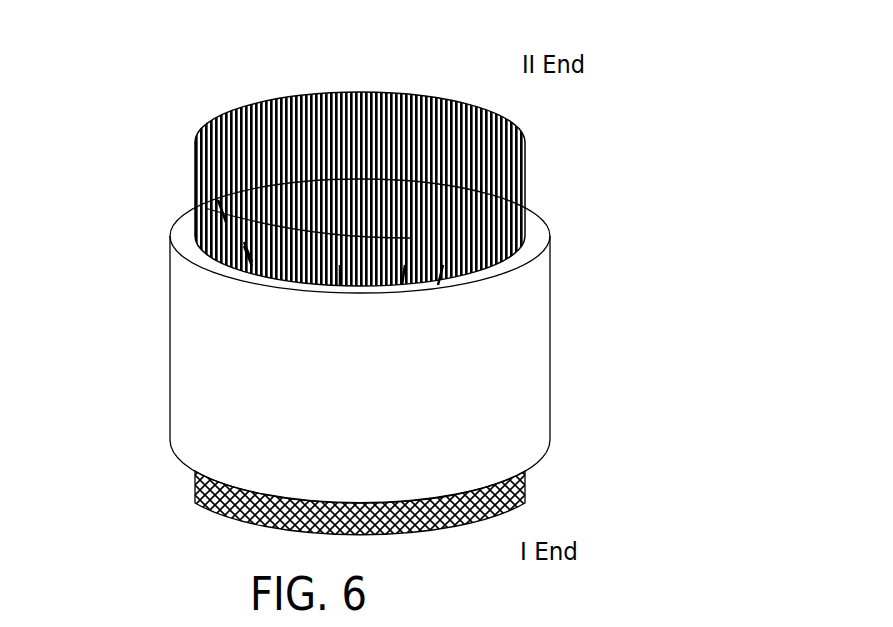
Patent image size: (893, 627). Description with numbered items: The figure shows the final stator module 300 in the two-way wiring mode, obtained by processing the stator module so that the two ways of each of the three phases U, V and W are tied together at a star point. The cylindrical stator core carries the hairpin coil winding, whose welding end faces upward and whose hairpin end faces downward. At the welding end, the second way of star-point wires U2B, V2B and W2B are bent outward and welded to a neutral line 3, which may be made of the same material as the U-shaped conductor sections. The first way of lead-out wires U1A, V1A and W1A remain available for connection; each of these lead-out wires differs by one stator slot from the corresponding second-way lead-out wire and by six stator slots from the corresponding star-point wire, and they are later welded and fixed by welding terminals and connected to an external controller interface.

The final stator module 300 is at (290, 276).
The neutral line 3 is at (428, 366).
The W-phase 1-way lead-out wire W1A is at (248, 255).
The W-phase 2-way star-point wire W2B is at (222, 212).
The V-phase 1-way lead-out wire V1A is at (340, 275).
The V-phase 2-way star-point wire V2B is at (248, 252).
The U-phase 1-way lead-out wire U1A is at (443, 275).
The U-phase 2-way star-point wire U2B is at (405, 275).